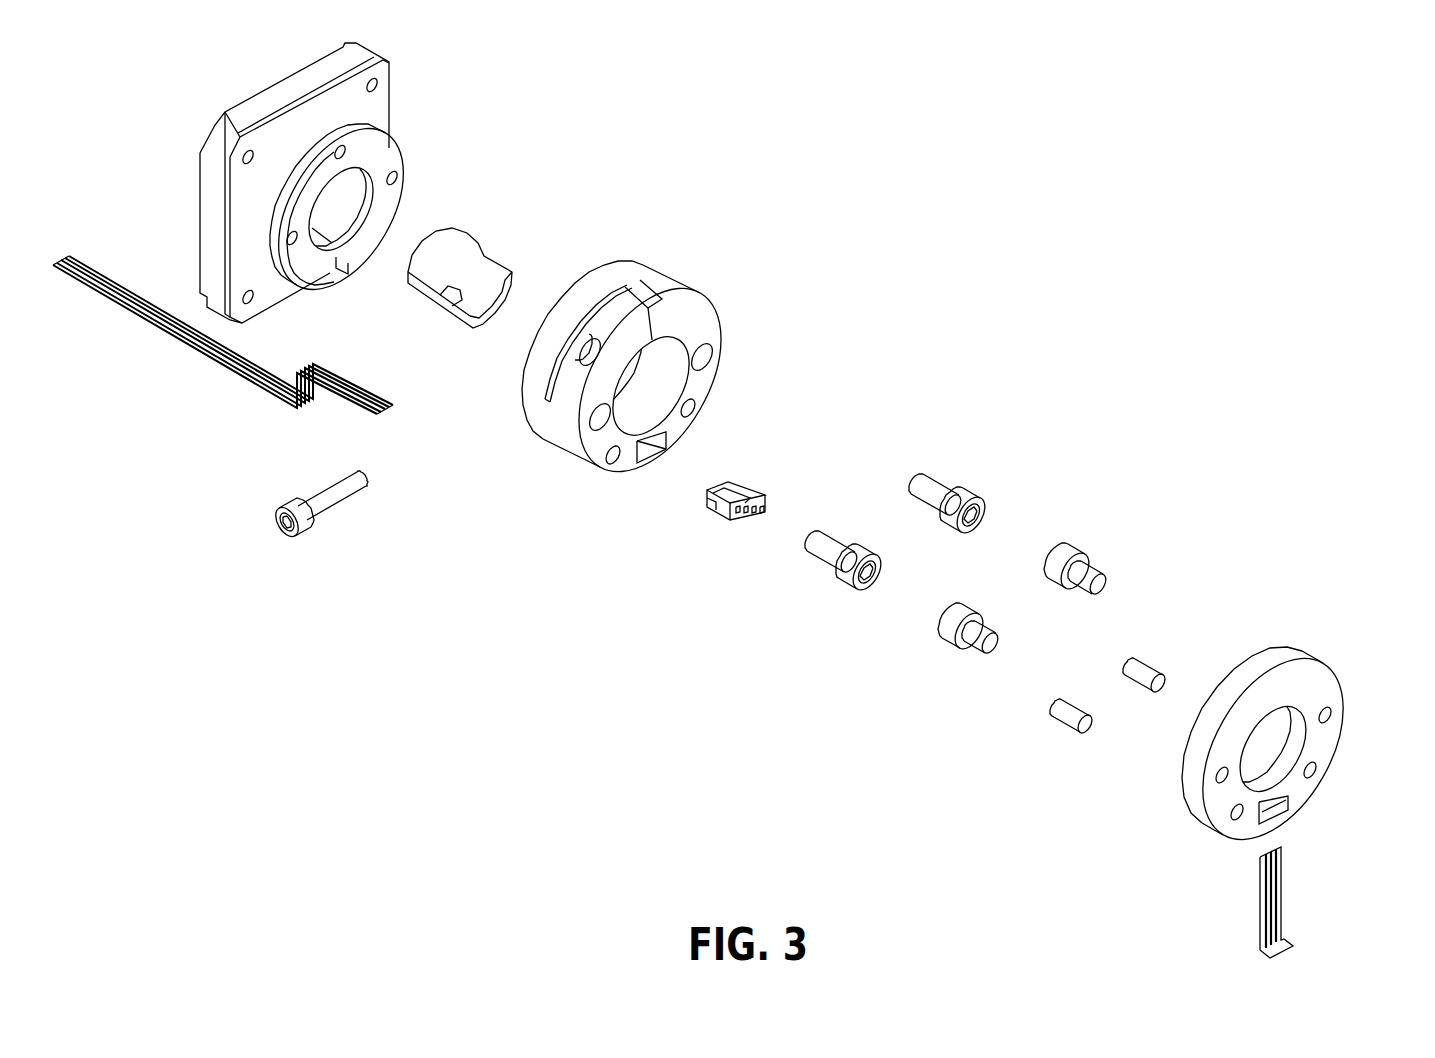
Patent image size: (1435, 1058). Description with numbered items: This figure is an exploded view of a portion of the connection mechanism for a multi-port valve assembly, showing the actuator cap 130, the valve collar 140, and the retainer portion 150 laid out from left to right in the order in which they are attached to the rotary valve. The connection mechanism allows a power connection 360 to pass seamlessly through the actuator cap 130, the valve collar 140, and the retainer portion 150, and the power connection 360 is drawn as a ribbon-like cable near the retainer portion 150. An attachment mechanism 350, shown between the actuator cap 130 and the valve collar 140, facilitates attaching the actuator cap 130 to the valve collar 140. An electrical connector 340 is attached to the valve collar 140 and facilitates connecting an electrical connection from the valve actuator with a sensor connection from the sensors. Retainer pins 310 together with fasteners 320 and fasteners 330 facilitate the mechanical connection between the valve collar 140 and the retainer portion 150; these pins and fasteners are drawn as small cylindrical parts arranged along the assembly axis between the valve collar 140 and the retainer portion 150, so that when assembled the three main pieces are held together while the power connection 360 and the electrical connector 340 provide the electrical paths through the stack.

The actuator cap 130 is at (393, 67).
The valve collar 140 is at (680, 292).
The retainer portion 150 is at (1313, 655).
The retainer pins 310 is at (1145, 663).
The fasteners 320 is at (1092, 563).
The fasteners 330 is at (948, 487).
The electrical connector 340 is at (743, 483).
The attachment mechanism 350 is at (470, 240).
The power connection 360 is at (1283, 897).